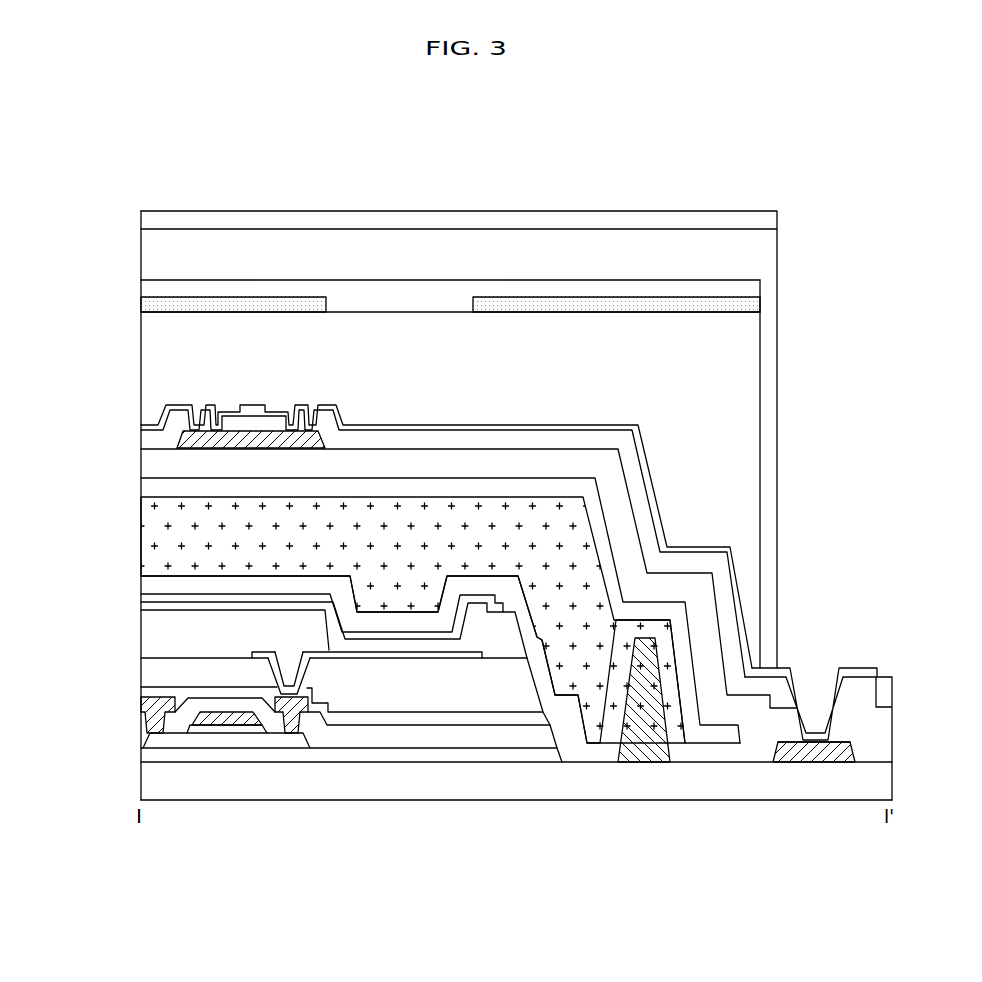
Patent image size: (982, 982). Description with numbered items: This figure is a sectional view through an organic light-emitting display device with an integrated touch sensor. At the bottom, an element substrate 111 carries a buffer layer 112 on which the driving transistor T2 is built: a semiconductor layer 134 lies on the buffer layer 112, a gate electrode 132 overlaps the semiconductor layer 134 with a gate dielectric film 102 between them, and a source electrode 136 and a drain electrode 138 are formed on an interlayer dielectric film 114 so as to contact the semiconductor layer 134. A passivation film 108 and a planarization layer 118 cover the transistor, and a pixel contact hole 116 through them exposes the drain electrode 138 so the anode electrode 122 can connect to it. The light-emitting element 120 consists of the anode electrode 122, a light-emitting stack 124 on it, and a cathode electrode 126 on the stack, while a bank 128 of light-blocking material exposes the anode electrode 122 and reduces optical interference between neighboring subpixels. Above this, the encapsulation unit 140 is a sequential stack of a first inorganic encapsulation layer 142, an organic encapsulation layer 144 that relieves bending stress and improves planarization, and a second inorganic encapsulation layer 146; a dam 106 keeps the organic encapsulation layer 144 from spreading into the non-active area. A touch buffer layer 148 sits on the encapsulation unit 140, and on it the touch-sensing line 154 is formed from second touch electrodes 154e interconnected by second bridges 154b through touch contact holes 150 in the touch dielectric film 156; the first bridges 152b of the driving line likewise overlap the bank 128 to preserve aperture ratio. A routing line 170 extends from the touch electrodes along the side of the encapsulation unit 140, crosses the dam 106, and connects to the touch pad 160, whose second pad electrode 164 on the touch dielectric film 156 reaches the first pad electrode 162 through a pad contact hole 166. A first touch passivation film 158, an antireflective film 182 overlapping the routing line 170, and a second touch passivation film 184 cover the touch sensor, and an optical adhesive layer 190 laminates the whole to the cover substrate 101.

The cover substrate 101 is at (766, 221).
The optical adhesive layer 190 is at (765, 248).
The second touch passivation film 184 is at (158, 289).
The antireflective film 182 is at (158, 307).
The first touch passivation film 158 is at (158, 348).
The touch-sensing line 154 is at (389, 505).
The second touch electrode 154e is at (158, 427).
The second bridge 154b is at (185, 440).
The first bridge 152b is at (253, 405).
The touch contact hole 150 is at (300, 400).
The touch dielectric film 156 is at (641, 440).
The routing line 170 is at (657, 518).
The touch buffer layer 148 is at (158, 462).
The second inorganic encapsulation layer 146 is at (158, 490).
The organic encapsulation layer 144 is at (158, 541).
The first inorganic encapsulation layer 142 is at (415, 657).
The encapsulation unit 140 is at (391, 608).
The planarization layer 118 is at (158, 660).
The bank 128 is at (507, 650).
The pixel contact hole 116 is at (290, 664).
The passivation film 108 is at (158, 688).
The buffer layer 112 is at (158, 754).
The element substrate 111 is at (158, 784).
The interlayer dielectric film 114 is at (347, 738).
The gate dielectric film 102 is at (198, 732).
The source electrode 136 is at (162, 735).
The gate electrode 132 is at (224, 724).
The semiconductor layer 134 is at (250, 737).
The drain electrode 138 is at (290, 727).
The driving transistor T2 is at (252, 813).
The anode electrode 122 is at (397, 655).
The light-emitting stack 124 is at (435, 647).
The cathode electrode 126 is at (478, 645).
The light-emitting element 120 is at (334, 762).
The dam 106 is at (640, 760).
The pad contact hole 166 is at (816, 683).
The first pad electrode 162 is at (797, 763).
The second pad electrode 164 is at (822, 744).
The touch pad 160 is at (814, 812).